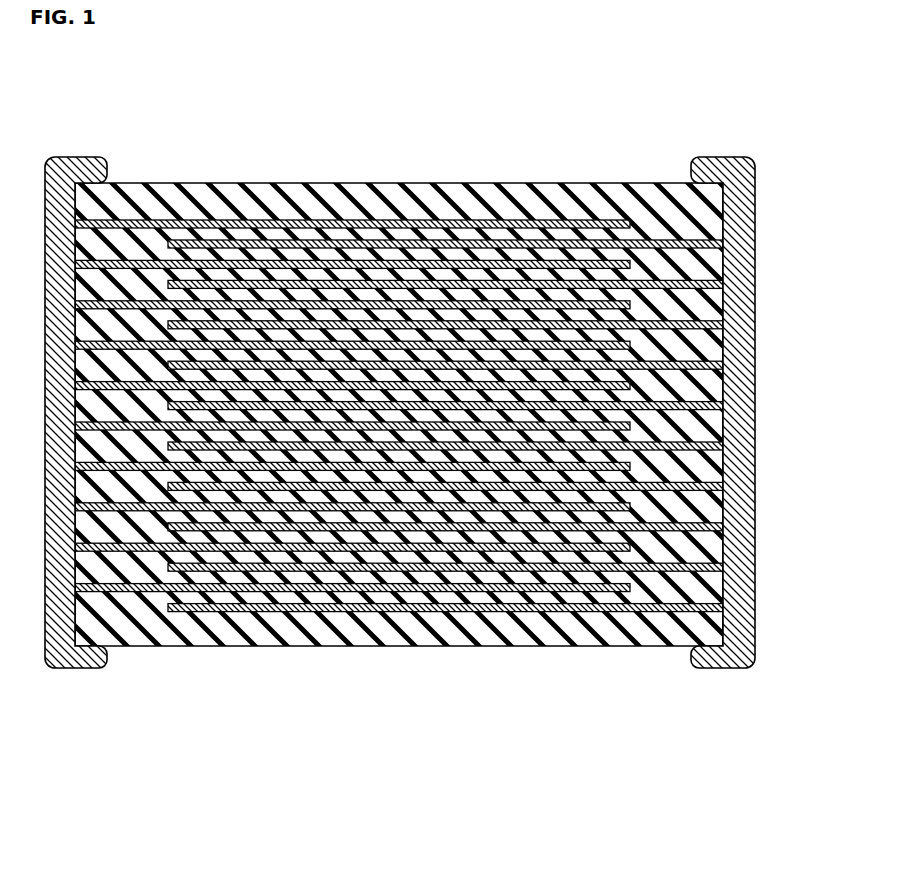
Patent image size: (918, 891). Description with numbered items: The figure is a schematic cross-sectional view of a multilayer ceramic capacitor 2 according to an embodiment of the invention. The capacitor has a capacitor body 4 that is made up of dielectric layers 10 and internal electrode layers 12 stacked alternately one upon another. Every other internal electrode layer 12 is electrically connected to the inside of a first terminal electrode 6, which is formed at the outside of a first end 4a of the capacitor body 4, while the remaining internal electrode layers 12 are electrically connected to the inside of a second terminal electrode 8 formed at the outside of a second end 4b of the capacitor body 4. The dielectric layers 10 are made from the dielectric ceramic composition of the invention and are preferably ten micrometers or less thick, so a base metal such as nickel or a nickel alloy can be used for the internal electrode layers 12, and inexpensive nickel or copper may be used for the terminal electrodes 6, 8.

The multilayer ceramic capacitor 2 is at (435, 411).
The capacitor body 4 is at (435, 421).
The first end 4a is at (40, 187).
The second end 4b is at (726, 513).
The first terminal electrode 6 is at (73, 662).
The second terminal electrode 8 is at (718, 172).
The dielectric layer 10 is at (339, 221).
The internal electrode layer 12 is at (440, 196).